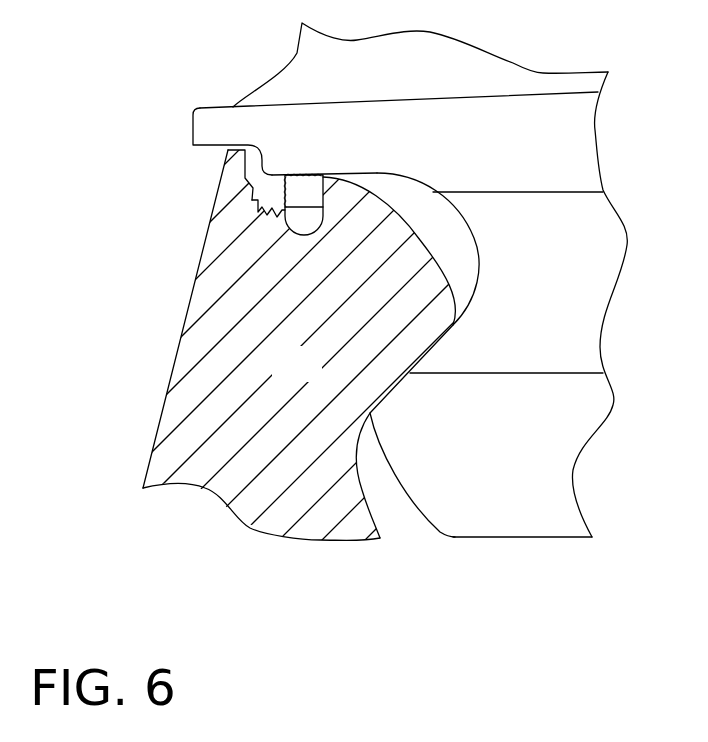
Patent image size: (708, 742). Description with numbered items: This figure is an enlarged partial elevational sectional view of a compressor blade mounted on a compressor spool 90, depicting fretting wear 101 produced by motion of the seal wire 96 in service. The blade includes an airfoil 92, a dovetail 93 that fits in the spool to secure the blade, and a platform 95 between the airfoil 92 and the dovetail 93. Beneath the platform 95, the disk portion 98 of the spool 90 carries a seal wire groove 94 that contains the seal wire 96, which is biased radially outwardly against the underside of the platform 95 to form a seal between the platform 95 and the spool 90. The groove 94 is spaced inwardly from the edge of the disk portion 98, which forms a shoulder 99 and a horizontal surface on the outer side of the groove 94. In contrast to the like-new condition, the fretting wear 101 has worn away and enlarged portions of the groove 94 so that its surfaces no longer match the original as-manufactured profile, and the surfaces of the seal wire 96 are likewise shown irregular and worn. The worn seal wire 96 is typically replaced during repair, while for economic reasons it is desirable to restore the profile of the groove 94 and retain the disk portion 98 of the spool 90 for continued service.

The compressor spool 90 is at (172, 377).
The airfoil 92 is at (520, 80).
The dovetail 93 is at (592, 287).
The seal wire groove 94 is at (322, 227).
The platform 95 is at (192, 120).
The seal wire 96 is at (303, 188).
The disk portion 98 is at (315, 379).
The shoulder 99 is at (233, 160).
The fretting wear 101 is at (253, 200).